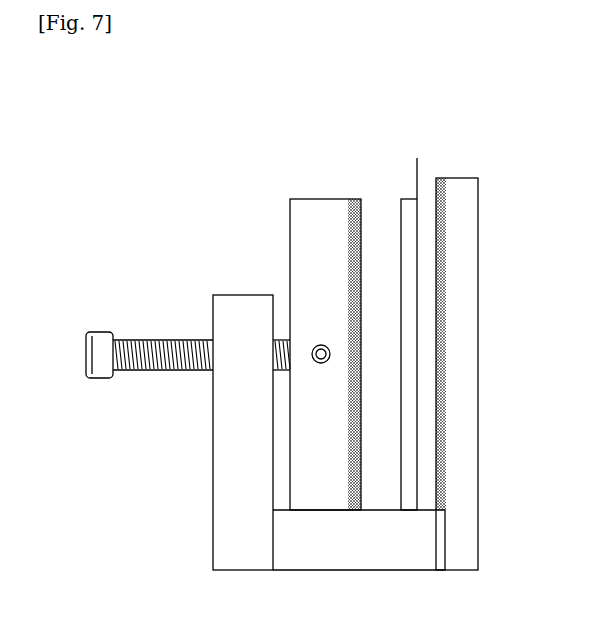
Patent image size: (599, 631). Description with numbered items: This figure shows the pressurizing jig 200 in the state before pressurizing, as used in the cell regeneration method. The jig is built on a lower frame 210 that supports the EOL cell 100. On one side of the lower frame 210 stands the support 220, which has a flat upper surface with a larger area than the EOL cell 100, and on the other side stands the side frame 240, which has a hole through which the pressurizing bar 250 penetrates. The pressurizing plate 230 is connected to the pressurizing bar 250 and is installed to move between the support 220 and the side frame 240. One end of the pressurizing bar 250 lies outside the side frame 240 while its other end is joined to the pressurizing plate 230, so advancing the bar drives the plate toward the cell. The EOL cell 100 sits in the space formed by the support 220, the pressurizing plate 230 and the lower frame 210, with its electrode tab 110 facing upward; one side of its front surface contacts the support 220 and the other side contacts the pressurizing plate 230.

The pressurizing jig 200 is at (103, 98).
The lower frame 210 is at (360, 562).
The support 220 is at (470, 375).
The pressurizing plate 230 is at (299, 228).
The side frame 240 is at (220, 500).
The pressurizing bar 250 is at (100, 340).
The EOL cell 100 is at (401, 210).
The electrode tab 110 is at (417, 162).